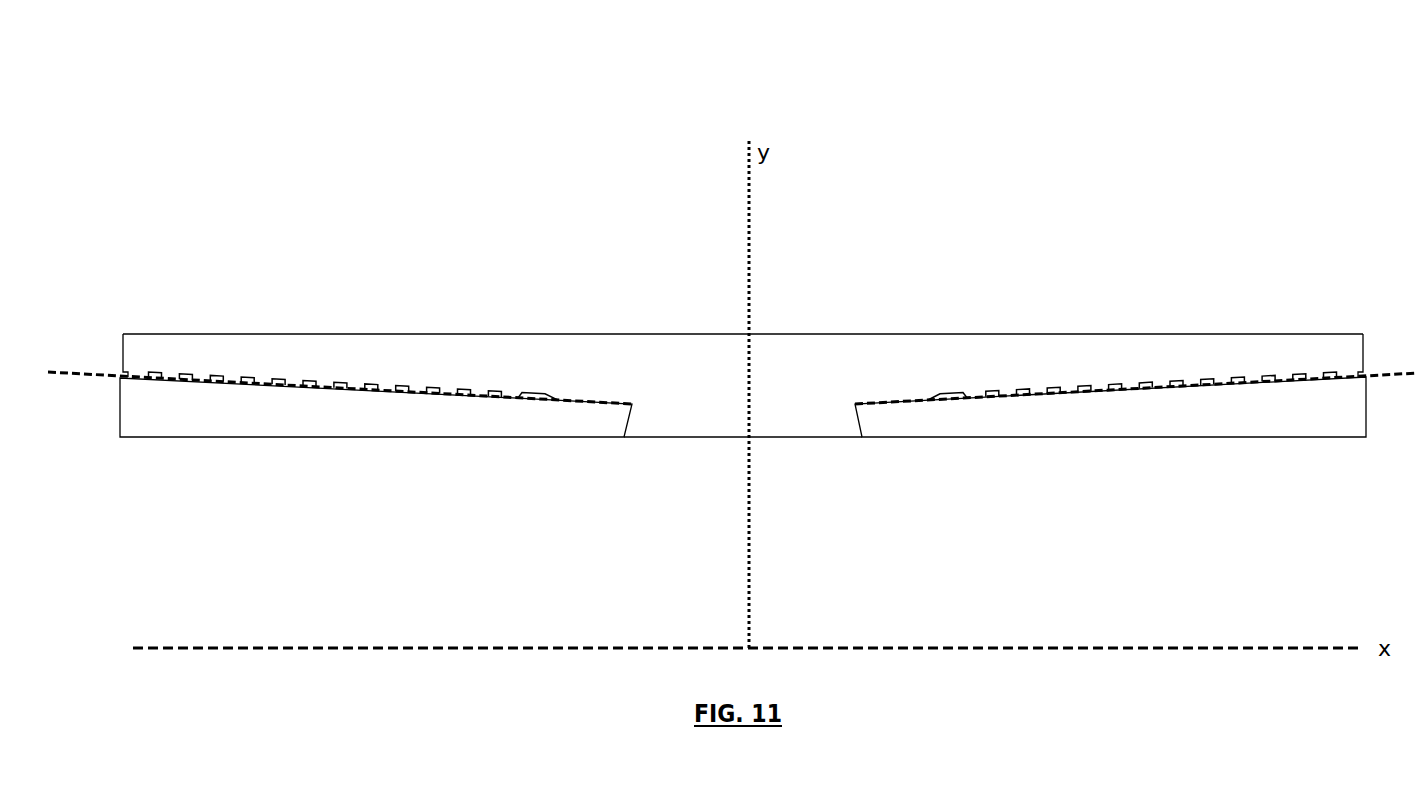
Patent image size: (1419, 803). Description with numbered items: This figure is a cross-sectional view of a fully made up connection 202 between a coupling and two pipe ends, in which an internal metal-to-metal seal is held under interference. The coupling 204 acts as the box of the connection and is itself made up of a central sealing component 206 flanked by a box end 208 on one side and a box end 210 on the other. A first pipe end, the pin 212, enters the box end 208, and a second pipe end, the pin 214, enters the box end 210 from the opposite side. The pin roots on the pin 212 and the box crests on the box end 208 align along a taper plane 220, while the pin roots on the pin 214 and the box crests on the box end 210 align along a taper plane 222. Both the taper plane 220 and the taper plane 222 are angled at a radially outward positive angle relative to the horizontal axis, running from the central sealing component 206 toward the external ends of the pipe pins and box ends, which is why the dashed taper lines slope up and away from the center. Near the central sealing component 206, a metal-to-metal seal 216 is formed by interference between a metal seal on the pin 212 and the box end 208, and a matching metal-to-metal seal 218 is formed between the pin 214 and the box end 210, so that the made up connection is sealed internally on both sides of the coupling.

The connection 202 is at (1084, 174).
The coupling 204 is at (797, 360).
The central sealing component 206 is at (656, 428).
The box end 208 is at (305, 349).
The box end 210 is at (1185, 350).
The pin 212 is at (324, 427).
The pin 214 is at (1204, 420).
The metal-to-metal seal 216 is at (585, 400).
The metal-to-metal seal 218 is at (891, 400).
The taper plane 220 is at (340, 375).
The taper plane 222 is at (1136, 375).